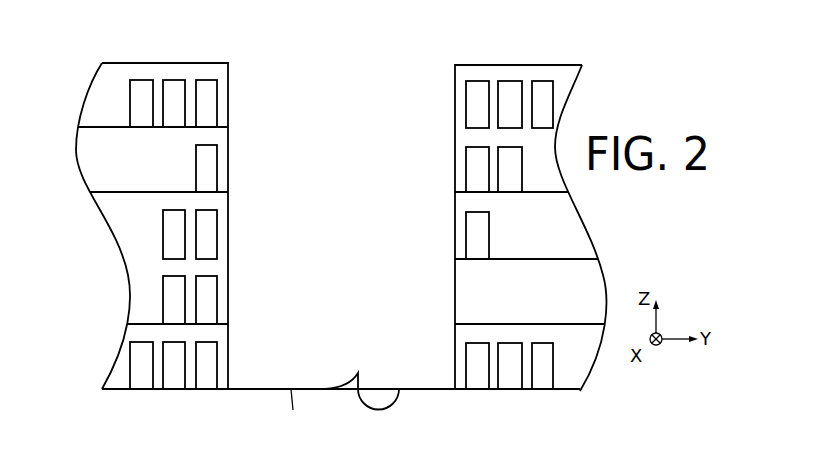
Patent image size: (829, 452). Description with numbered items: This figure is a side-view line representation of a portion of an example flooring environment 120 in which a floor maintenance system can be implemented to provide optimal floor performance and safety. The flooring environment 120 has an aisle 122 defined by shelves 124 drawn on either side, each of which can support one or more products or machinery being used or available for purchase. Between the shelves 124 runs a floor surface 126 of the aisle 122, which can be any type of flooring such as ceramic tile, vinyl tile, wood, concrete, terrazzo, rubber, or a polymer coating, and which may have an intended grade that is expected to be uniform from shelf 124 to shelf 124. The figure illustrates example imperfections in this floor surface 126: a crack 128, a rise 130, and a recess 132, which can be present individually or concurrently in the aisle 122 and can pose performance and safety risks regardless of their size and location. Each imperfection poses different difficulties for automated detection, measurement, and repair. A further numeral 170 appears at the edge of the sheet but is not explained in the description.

The flooring environment 120 is at (600, 43).
The aisle 122 is at (337, 88).
The shelves 124 is at (228, 128).
The floor surface 126 is at (242, 389).
The crack 128 is at (289, 380).
The rise 130 is at (348, 398).
The recess 132 is at (395, 382).
The reference element 170 is at (694, 448).